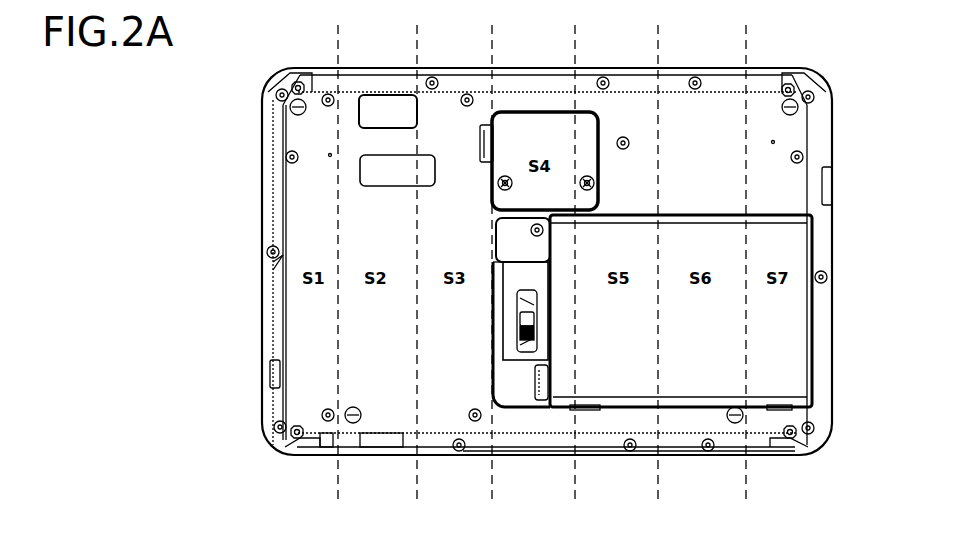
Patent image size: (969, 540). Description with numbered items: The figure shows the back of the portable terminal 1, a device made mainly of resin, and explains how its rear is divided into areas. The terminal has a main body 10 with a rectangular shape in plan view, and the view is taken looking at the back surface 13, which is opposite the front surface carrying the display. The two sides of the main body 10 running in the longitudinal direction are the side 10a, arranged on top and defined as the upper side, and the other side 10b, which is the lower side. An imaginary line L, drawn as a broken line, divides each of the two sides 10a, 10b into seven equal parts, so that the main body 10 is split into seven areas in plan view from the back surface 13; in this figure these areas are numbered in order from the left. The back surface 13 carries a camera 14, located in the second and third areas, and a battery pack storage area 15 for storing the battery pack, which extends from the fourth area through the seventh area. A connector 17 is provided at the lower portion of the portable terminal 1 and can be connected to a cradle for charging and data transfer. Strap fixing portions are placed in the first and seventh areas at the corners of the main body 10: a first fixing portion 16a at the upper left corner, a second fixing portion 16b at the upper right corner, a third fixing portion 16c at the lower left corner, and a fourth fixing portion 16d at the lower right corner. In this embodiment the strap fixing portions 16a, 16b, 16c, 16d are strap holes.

The portable terminal 1 is at (850, 276).
The main body 10 is at (608, 68).
The side in the longitudinal direction (upper side) 10a is at (445, 68).
The side in the longitudinal direction (lower side) 10b is at (397, 457).
The back surface 13 is at (703, 123).
The camera 14 is at (383, 105).
The battery pack storage area 15 is at (620, 360).
The first fixing portion 16a is at (280, 85).
The second fixing portion 16b is at (800, 82).
The third fixing portion 16c is at (287, 450).
The fourth fixing portion 16d is at (803, 447).
The connector 17 is at (522, 457).
The imaginary line L is at (537, 254).